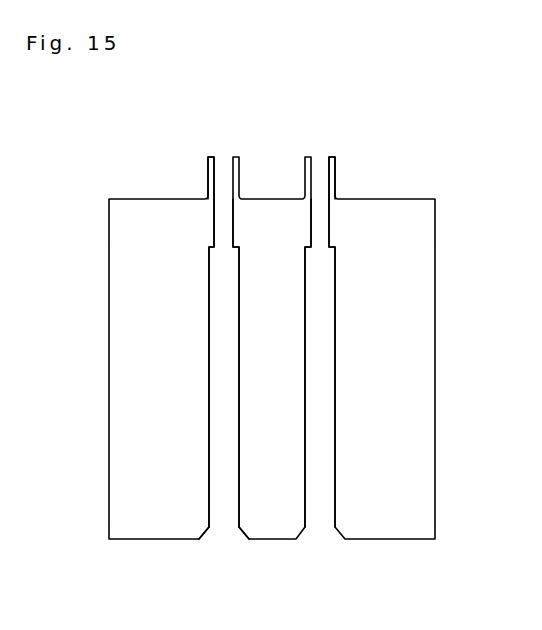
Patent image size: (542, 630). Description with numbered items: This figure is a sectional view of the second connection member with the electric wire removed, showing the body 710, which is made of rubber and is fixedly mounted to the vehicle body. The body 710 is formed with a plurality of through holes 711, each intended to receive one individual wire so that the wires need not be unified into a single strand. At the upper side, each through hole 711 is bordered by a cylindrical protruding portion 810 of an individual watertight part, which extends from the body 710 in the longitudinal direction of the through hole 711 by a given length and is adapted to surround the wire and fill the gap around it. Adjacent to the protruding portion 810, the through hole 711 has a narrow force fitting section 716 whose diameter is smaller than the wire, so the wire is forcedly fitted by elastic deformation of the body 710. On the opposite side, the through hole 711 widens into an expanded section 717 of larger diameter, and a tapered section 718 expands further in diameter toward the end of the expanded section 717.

The body 710 is at (412, 339).
The through hole 711 is at (215, 163).
The force fitting section 716 is at (217, 213).
The expanded section 717 is at (236, 397).
The tapered section 718 is at (207, 540).
The protruding portion 810 is at (336, 176).